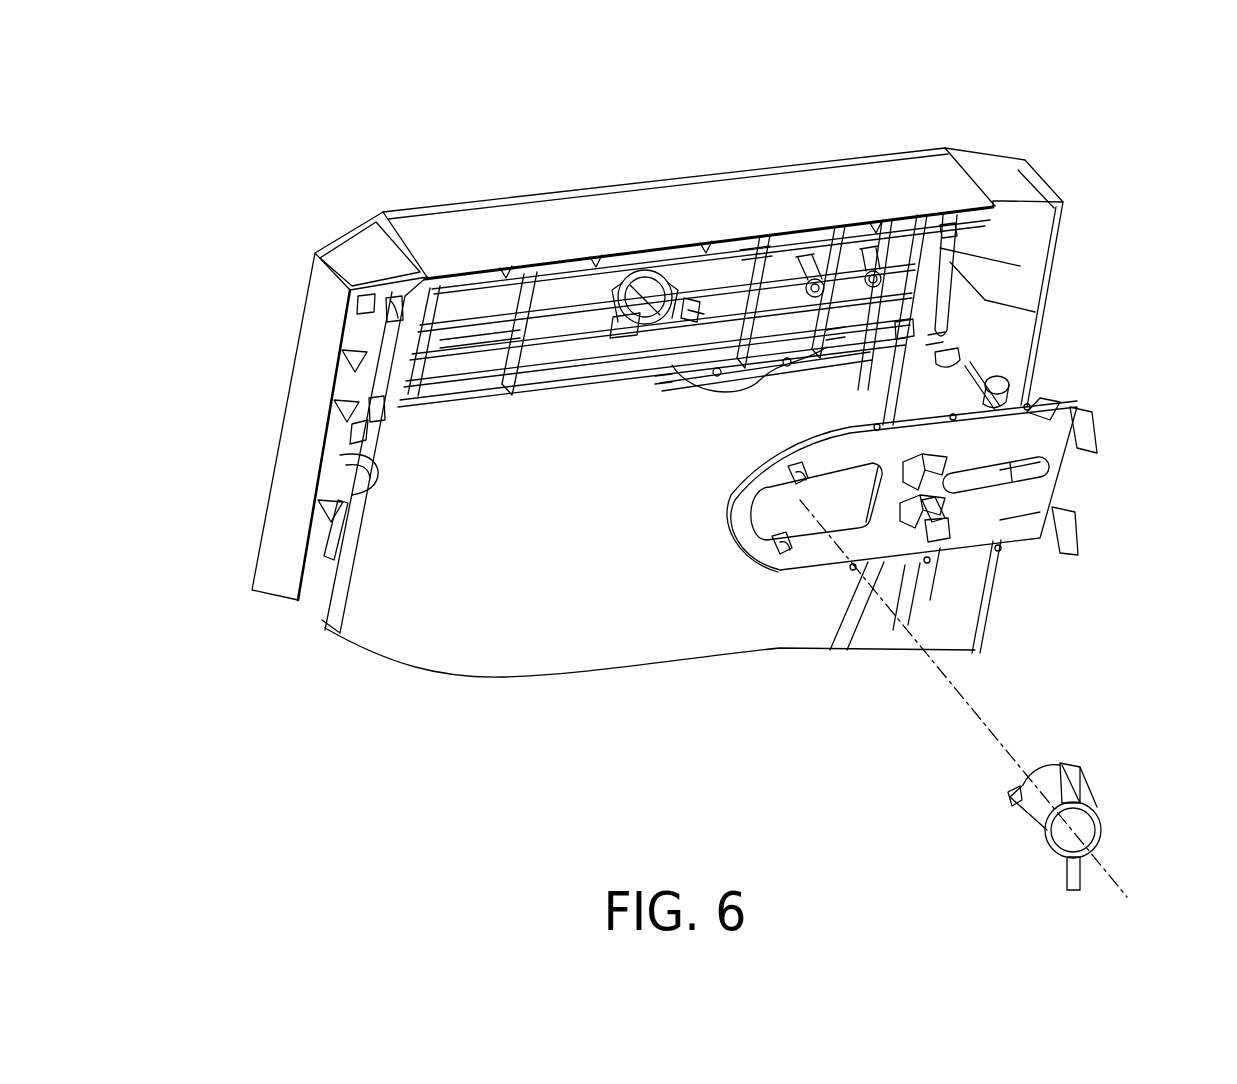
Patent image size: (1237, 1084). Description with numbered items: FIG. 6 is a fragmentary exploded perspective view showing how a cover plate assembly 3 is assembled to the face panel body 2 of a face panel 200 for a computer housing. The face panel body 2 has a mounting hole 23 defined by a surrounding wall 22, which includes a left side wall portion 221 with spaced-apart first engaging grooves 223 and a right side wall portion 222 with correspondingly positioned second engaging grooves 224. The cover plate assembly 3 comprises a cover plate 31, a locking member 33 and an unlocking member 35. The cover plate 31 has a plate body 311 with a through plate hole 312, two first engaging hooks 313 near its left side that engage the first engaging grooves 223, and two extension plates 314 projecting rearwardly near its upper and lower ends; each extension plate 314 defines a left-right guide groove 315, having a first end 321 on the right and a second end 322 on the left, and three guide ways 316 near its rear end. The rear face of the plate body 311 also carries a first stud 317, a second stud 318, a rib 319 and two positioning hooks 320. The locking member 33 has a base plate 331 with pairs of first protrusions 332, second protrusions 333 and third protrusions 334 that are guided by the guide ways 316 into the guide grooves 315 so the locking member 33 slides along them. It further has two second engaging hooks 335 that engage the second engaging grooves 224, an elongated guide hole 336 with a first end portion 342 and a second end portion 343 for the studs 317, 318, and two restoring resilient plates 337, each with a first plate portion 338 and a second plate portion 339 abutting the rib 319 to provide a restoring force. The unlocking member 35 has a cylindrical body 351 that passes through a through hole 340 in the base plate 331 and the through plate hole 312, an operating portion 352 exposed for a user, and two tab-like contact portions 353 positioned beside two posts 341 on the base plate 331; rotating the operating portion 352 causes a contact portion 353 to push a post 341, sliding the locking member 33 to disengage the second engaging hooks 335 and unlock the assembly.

The face panel 200 is at (288, 237).
The face panel body 2 is at (401, 192).
The surrounding wall 22 is at (317, 567).
The mounting hole 23 is at (420, 567).
The left side wall portion 221 is at (333, 560).
The right side wall portion 222 is at (877, 607).
The first engaging grooves 223 is at (385, 307).
The second engaging grooves 224 is at (950, 230).
The cover plate assembly 3 is at (1135, 357).
The cover plate 31 is at (460, 408).
The plate body 311 is at (447, 340).
The through plate hole 312 is at (643, 285).
The first engaging hooks 313 is at (392, 303).
The extension plates 314 is at (687, 365).
The guide groove 315 is at (833, 345).
The guide ways 316 is at (787, 365).
The first stud 317 is at (808, 275).
The second stud 318 is at (873, 270).
The rib 319 is at (757, 263).
The positioning hooks 320 is at (632, 317).
The first end 321 is at (907, 310).
The second end 322 is at (665, 375).
The locking member 33 is at (1100, 465).
The base plate 331 is at (1023, 500).
The first protrusions 332 is at (1027, 405).
The second protrusions 333 is at (877, 427).
The third protrusions 334 is at (950, 417).
The second engaging hooks 335 is at (1097, 430).
The elongated guide hole 336 is at (1033, 462).
The restoring resilient plates 337 is at (935, 528).
The first plate portion 338 is at (940, 501).
The second plate portion 339 is at (912, 514).
The through hole 340 is at (807, 513).
The posts 341 is at (790, 550).
The first end portion 342 is at (952, 462).
The second end portion 343 is at (1040, 475).
The unlocking member 35 is at (1107, 783).
The cylindrical body 351 is at (1037, 815).
The operating portion 352 is at (1013, 790).
The contact portions 353 is at (1060, 763).